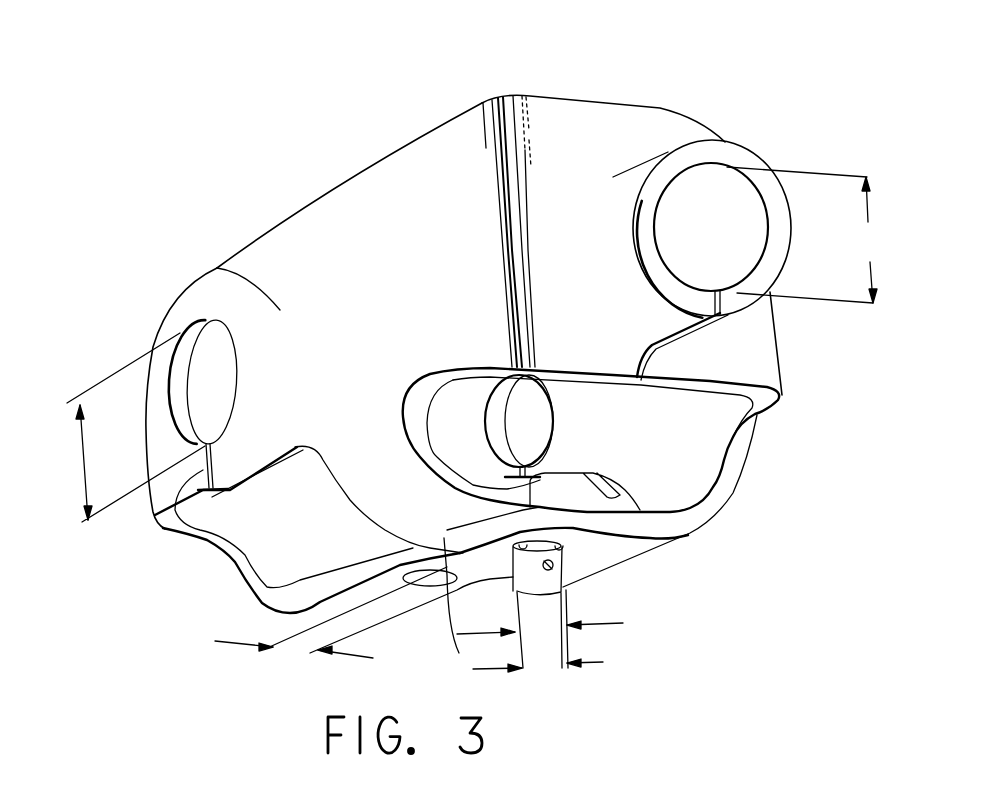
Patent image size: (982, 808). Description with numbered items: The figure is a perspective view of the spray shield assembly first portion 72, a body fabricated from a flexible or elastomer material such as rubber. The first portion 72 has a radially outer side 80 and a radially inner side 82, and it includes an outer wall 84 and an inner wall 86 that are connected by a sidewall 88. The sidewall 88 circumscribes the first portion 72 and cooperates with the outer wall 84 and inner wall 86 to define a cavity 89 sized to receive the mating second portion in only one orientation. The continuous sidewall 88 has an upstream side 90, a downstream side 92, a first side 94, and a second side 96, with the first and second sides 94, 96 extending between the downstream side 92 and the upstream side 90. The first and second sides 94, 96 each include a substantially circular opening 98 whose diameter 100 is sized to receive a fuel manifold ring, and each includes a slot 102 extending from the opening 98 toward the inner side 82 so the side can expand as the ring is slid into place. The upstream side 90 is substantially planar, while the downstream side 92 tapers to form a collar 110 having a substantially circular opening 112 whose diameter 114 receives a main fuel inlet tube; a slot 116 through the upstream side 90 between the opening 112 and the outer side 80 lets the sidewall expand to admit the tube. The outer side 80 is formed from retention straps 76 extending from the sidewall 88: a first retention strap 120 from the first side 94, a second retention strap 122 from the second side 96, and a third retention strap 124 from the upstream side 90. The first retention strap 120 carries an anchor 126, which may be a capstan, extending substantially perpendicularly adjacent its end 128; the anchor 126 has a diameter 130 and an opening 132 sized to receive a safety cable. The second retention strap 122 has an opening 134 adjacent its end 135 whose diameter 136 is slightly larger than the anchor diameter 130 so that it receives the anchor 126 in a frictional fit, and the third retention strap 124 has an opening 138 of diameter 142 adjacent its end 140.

The spray shield assembly first portion 72 is at (163, 130).
The retention straps 76 is at (660, 555).
The radially outer side 80 is at (653, 618).
The radially inner side 82 is at (452, 104).
The outer wall 84 is at (570, 563).
The inner wall 86 is at (577, 101).
The sidewall 88 is at (217, 268).
The cavity 89 is at (262, 514).
The upstream side 90 is at (132, 310).
The downstream side 92 is at (752, 138).
The first side 94 is at (303, 237).
The second side 96 is at (703, 443).
The opening 98 is at (198, 383).
The diameter 100 is at (80, 455).
The slot 102 is at (161, 516).
The collar 110 is at (697, 328).
The opening 112 is at (713, 223).
The diameter 114 is at (809, 235).
The slot 116 is at (650, 356).
The first retention strap 120 is at (363, 498).
The second retention strap 122 is at (632, 565).
The third retention strap 124 is at (330, 618).
The anchor 126 is at (537, 590).
The end 128 is at (628, 491).
The diameter 130 is at (603, 662).
The opening 132 is at (550, 552).
The opening 134 is at (533, 480).
The end 135 is at (490, 535).
The diameter 136 is at (621, 623).
The opening 138 is at (413, 577).
The end 140 is at (417, 547).
The diameter 142 is at (215, 641).